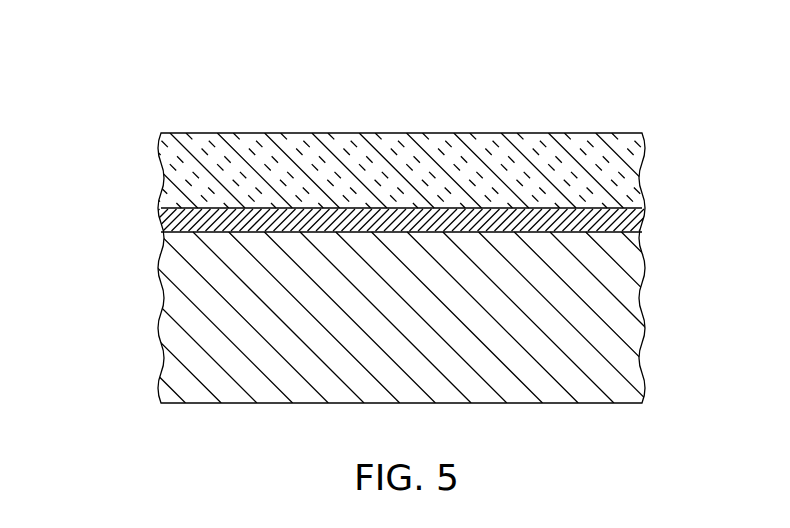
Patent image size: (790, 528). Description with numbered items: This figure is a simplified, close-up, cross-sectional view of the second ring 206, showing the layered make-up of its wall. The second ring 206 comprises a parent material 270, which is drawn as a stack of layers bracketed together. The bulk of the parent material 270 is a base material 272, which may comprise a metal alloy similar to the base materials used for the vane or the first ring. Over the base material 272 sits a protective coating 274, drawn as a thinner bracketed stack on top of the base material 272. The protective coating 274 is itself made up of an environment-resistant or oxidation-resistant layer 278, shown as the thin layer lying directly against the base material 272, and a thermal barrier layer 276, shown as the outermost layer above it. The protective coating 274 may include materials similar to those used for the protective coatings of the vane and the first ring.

The second ring 206 is at (499, 113).
The parent material 270 is at (77, 135).
The base material 272 is at (637, 311).
The protective coating 274 is at (151, 135).
The thermal barrier layer 276 is at (637, 181).
The environment-resistant or oxidation-resistant layer 278 is at (637, 221).